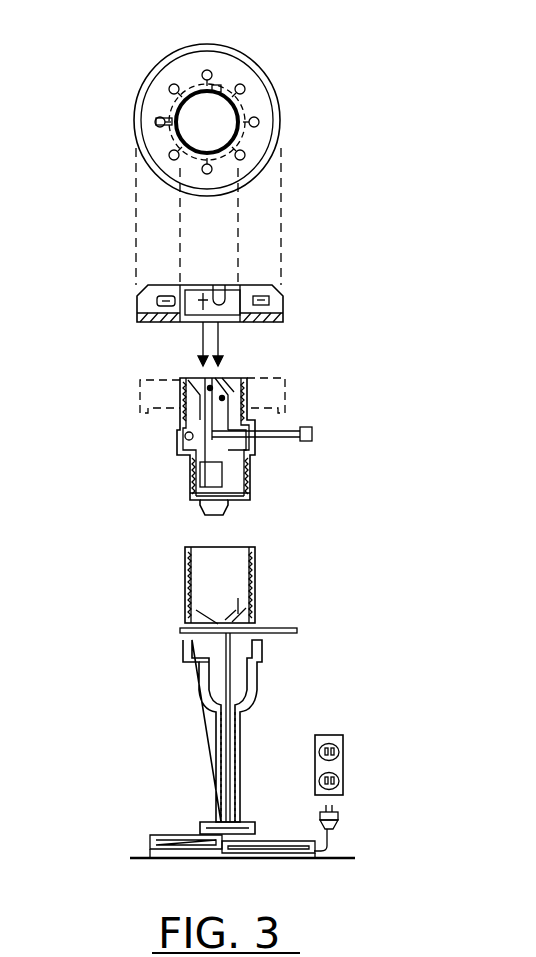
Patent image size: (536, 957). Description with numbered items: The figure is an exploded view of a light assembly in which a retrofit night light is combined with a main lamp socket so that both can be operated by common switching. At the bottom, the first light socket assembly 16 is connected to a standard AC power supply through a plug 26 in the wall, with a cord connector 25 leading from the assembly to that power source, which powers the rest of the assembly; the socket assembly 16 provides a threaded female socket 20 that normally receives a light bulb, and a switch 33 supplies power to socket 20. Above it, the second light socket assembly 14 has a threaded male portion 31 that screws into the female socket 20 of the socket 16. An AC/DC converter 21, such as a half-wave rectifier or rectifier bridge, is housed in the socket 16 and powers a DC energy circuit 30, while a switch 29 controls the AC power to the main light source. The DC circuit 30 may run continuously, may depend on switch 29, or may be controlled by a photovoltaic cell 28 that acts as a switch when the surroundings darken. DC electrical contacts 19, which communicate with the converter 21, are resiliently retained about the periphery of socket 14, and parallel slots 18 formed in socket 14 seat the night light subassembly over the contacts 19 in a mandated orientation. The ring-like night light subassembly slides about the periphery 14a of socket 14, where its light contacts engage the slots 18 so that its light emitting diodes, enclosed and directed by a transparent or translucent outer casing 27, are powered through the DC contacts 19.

The second light socket assembly 14 is at (257, 452).
The periphery of socket 14a is at (251, 378).
The first light socket assembly 16 is at (182, 653).
The parallel slots 18 is at (178, 378).
The DC electrical contacts 19 is at (224, 398).
The threaded female socket 20 is at (222, 582).
The AC/DC converter 21 is at (205, 475).
The plug 25 is at (341, 815).
The plug 26 is at (327, 735).
The outer casing 27 is at (283, 286).
The photovoltaic cell 28 is at (184, 436).
The switch 29 is at (312, 441).
The DC energy circuit 30 is at (248, 105).
The threaded male portion 31 is at (190, 494).
The switch 33 is at (298, 630).